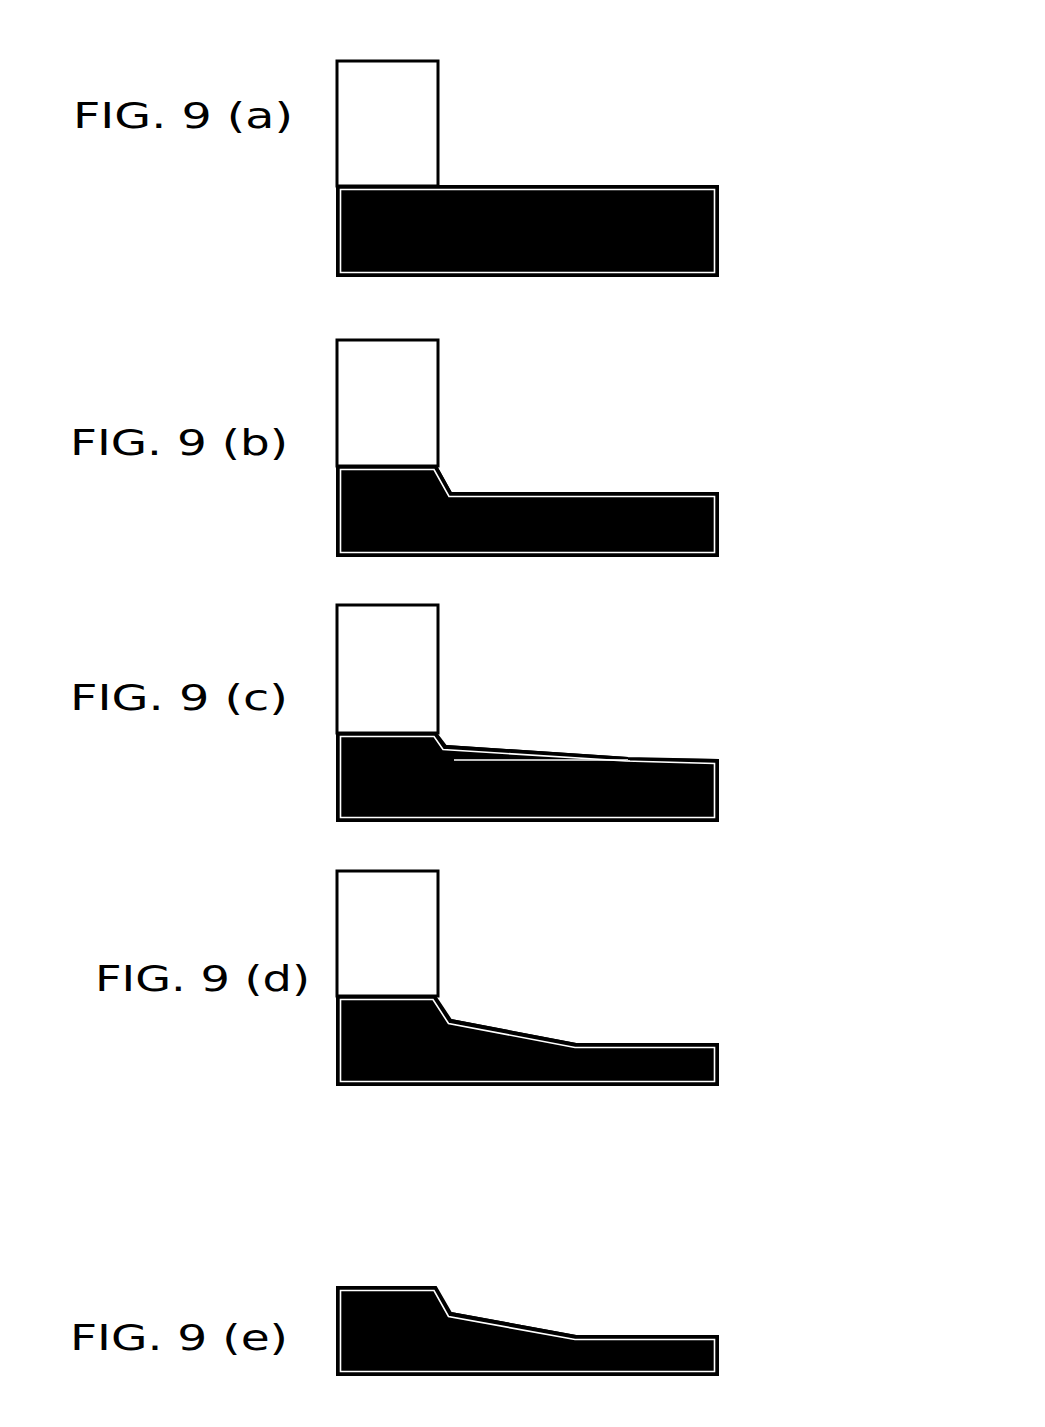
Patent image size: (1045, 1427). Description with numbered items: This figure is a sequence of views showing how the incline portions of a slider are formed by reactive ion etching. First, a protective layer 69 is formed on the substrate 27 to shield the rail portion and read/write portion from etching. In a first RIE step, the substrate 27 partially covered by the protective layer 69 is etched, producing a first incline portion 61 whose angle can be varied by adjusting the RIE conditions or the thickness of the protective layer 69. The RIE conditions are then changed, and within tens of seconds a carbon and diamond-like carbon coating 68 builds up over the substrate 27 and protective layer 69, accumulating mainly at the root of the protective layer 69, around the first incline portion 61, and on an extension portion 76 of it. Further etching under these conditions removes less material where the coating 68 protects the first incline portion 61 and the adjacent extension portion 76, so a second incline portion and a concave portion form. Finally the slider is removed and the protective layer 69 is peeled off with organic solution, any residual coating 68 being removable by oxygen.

The protective layer 69 is at (387, 53).
The substrate 27 is at (710, 215).
The first incline portion 61 is at (440, 475).
The coating 68 is at (482, 740).
The extension portion 76 is at (643, 752).